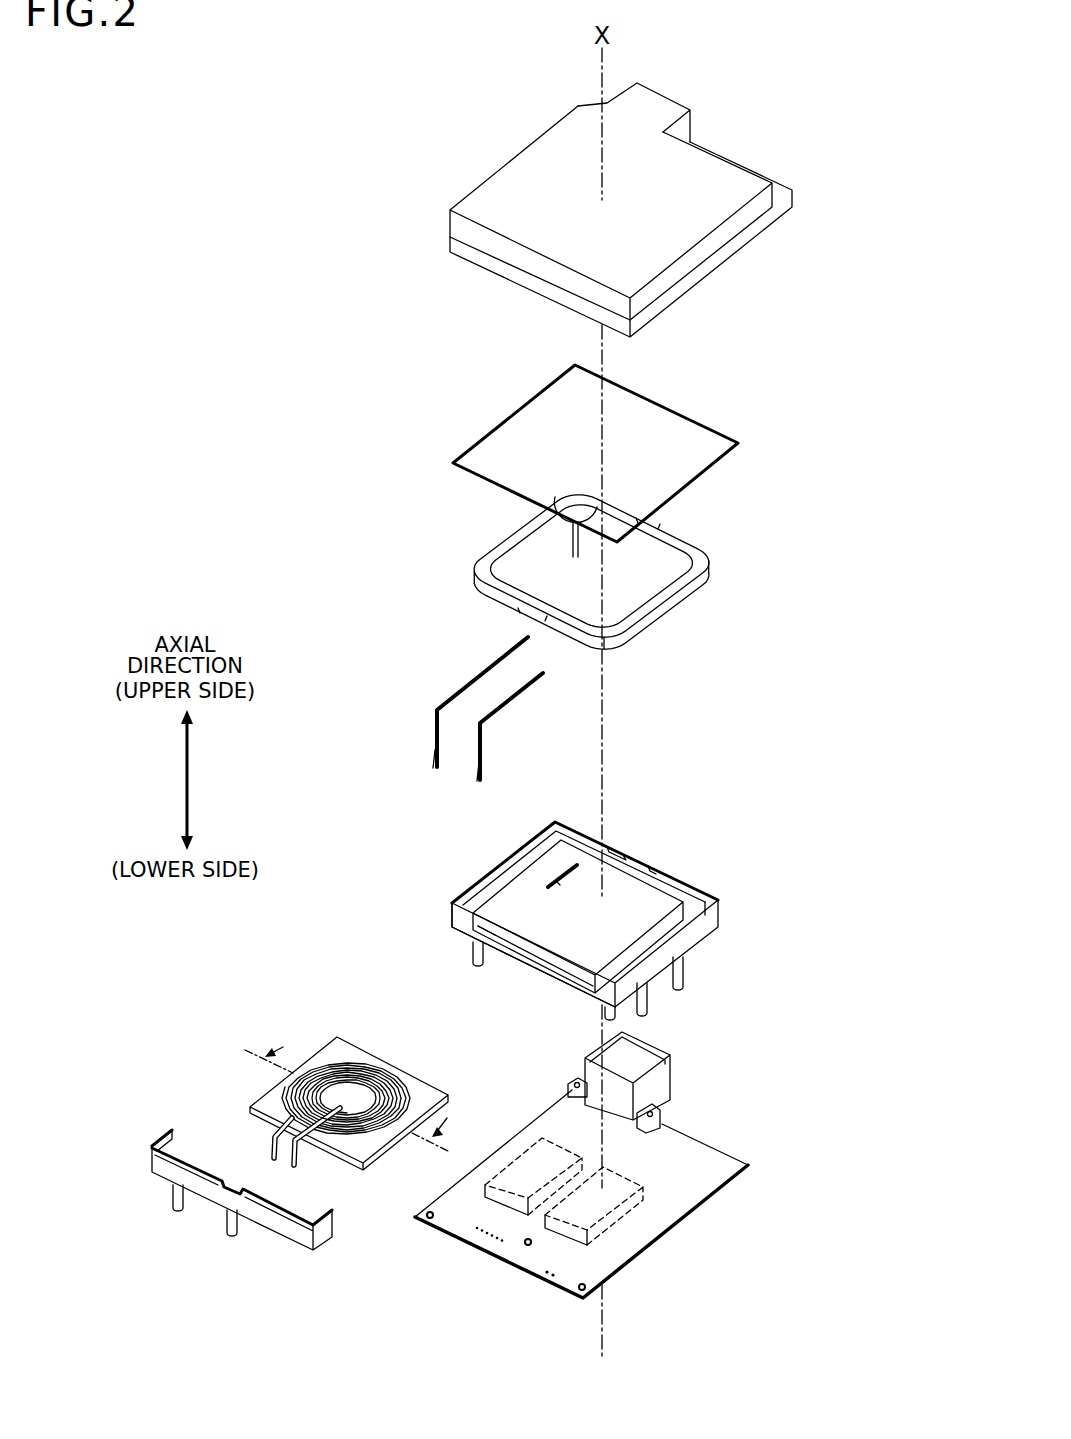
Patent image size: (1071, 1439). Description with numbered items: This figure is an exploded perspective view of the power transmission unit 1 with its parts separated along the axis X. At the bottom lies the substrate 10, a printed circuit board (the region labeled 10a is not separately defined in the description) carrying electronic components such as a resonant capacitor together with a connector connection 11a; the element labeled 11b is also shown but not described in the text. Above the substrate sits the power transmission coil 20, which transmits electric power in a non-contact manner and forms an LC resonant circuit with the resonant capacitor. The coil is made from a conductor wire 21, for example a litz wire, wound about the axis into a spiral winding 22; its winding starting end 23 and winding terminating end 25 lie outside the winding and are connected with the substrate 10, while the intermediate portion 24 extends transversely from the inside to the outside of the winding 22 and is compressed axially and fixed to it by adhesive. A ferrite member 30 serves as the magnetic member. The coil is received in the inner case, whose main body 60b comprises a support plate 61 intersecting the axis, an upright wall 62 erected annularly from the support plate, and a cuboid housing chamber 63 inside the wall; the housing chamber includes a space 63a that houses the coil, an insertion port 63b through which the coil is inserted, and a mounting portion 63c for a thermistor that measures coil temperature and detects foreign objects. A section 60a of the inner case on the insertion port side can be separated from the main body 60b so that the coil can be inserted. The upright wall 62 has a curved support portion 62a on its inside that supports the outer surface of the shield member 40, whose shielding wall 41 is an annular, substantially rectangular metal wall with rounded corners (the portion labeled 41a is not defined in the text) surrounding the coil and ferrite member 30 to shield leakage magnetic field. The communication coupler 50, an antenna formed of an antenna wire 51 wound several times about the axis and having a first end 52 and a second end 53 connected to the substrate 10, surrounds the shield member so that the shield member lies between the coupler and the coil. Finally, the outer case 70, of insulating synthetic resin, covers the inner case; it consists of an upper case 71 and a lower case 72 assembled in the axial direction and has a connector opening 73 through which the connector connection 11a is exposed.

The power transmission unit 1 is at (393, 175).
The substrate 10 is at (581, 1221).
The board main surface 10a is at (578, 1268).
The connector connection 11a is at (660, 1087).
The lead wires 11b is at (508, 700).
The power transmission coil 20 is at (345, 1113).
The conductor wire 21 is at (346, 1098).
The winding 22 is at (346, 1098).
The winding starting end 23 is at (298, 1157).
The intermediate portion 24 is at (345, 1157).
The winding terminating end 25 is at (272, 1139).
The ferrite member 30 is at (428, 1090).
The shield member 40 is at (593, 569).
The shielding wall 41 is at (592, 566).
The inner surface of frame wall 41a is at (673, 550).
The communication coupler 50 is at (627, 453).
The antenna wire 51 is at (712, 428).
The first end 52 is at (578, 558).
The second end 53 is at (572, 522).
The section 60a is at (242, 1184).
The main body 60b is at (551, 891).
The support plate 61 is at (452, 923).
The upright wall 62 is at (466, 890).
The support portion 62a is at (508, 872).
The housing chamber 63 is at (542, 879).
The space 63a is at (517, 945).
The insertion port 63b is at (497, 940).
The mounting portion 63c is at (565, 867).
The outer case 70 is at (641, 190).
The upper case 71 is at (695, 253).
The lower case 72 is at (639, 182).
The connector opening 73 is at (663, 94).